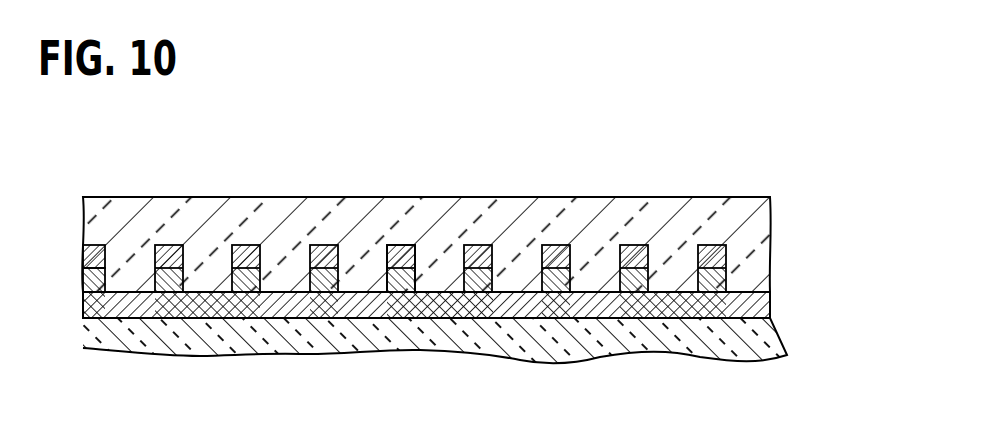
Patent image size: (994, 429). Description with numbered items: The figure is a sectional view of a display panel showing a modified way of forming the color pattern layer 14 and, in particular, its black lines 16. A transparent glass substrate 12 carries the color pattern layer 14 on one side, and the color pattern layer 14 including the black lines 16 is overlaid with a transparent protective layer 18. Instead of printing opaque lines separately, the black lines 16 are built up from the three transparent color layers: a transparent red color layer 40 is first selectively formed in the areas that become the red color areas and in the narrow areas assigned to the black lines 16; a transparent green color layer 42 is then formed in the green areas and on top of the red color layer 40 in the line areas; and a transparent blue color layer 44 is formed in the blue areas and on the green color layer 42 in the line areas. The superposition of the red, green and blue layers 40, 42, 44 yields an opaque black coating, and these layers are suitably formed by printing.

The transparent glass substrate 12 is at (762, 344).
The color pattern layer 14 is at (760, 302).
The black lines 16 is at (578, 240).
The transparent protective layer 18 is at (694, 210).
The transparent red color layer 40 is at (204, 312).
The transparent green color layer 42 is at (300, 290).
The transparent blue color layer 44 is at (389, 251).